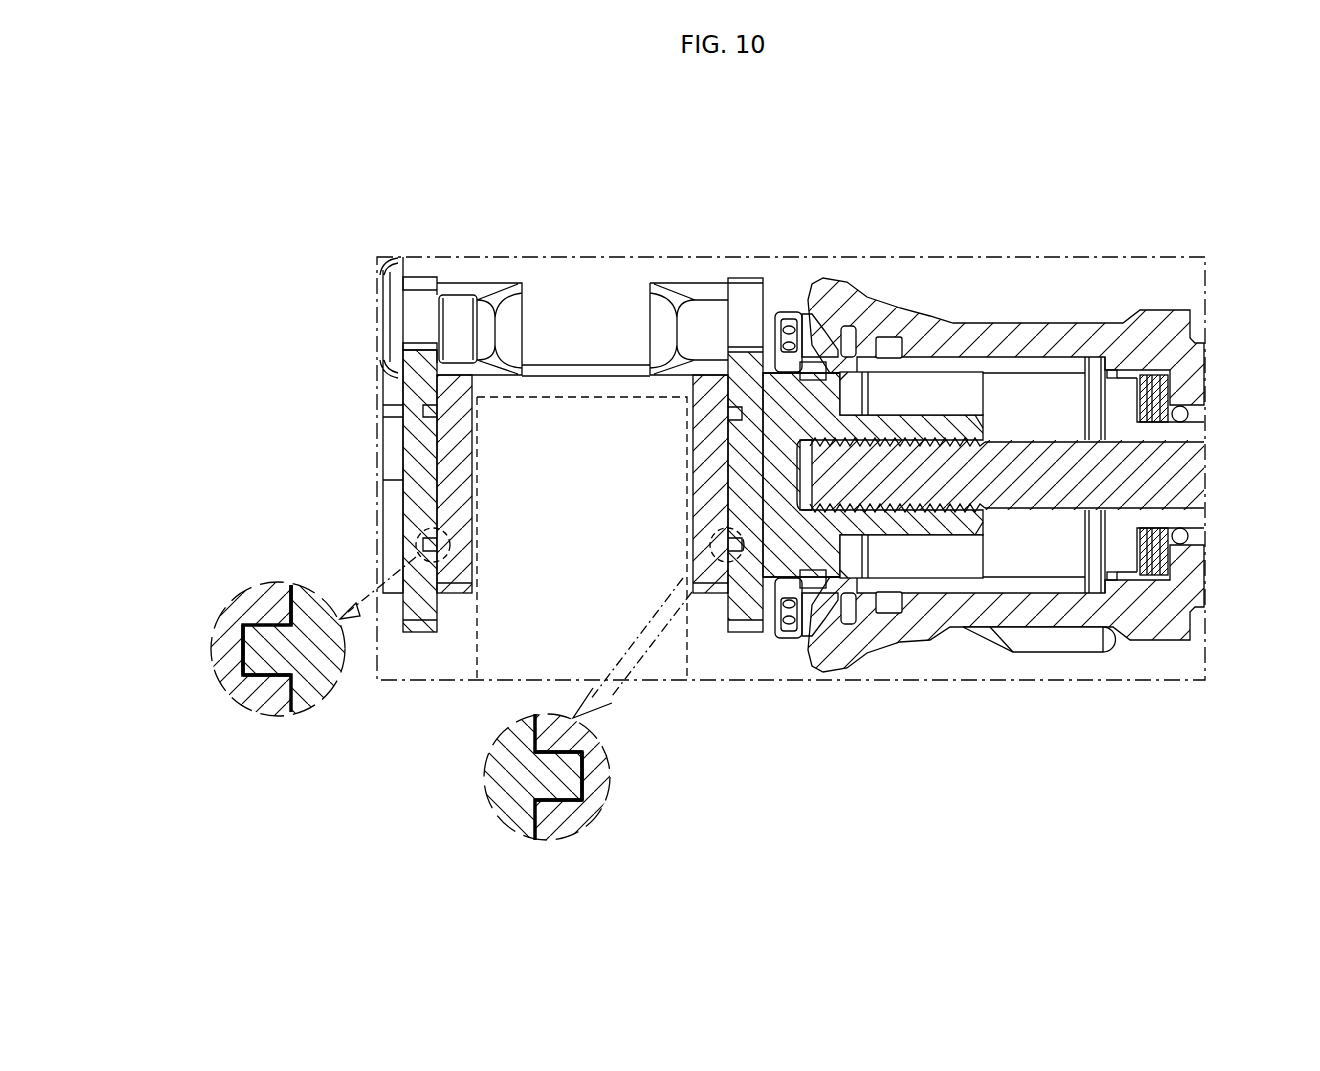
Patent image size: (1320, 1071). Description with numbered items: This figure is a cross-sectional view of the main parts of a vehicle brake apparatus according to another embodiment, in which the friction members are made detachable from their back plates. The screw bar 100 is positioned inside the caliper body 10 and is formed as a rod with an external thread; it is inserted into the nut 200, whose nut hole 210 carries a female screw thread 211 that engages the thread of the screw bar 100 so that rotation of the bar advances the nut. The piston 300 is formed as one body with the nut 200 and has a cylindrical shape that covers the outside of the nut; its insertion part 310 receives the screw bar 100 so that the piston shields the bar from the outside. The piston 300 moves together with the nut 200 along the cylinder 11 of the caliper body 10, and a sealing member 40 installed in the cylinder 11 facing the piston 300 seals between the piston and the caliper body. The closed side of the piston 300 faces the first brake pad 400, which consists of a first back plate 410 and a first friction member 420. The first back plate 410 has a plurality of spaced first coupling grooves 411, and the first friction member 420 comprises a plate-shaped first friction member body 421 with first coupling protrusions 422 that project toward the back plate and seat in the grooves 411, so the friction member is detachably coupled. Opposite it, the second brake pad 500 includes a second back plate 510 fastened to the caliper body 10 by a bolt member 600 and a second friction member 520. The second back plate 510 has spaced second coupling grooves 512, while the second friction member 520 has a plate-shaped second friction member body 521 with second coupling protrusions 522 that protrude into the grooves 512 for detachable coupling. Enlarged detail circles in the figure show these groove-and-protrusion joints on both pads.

The caliper body 10 is at (477, 638).
The cylinder 11 is at (1092, 345).
The sealing member 40 is at (798, 310).
The screw bar 100 is at (1040, 490).
The nut 200 is at (918, 398).
The nut hole 210 is at (990, 428).
The female screw thread 211 is at (945, 430).
The piston 300 is at (768, 395).
The insertion part 310 is at (1170, 386).
The first brake pad 400 is at (790, 745).
The first back plate 410 is at (742, 575).
The first coupling grooves 411 is at (576, 764).
The first friction member 420 is at (716, 556).
The first friction member body 421 is at (517, 795).
The first coupling protrusions 422 is at (560, 786).
The second brake pad 500 is at (282, 448).
The second back plate 510 is at (413, 468).
The second coupling grooves 512 is at (268, 658).
The second friction member 520 is at (455, 487).
The second friction member body 521 is at (268, 590).
The second coupling protrusions 522 is at (240, 636).
The bolt member 600 is at (455, 308).